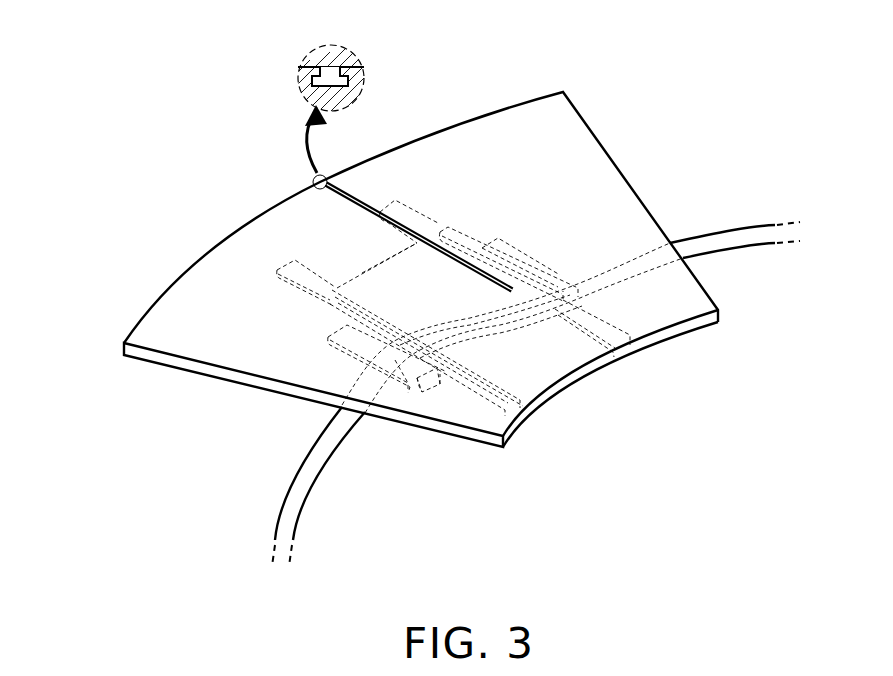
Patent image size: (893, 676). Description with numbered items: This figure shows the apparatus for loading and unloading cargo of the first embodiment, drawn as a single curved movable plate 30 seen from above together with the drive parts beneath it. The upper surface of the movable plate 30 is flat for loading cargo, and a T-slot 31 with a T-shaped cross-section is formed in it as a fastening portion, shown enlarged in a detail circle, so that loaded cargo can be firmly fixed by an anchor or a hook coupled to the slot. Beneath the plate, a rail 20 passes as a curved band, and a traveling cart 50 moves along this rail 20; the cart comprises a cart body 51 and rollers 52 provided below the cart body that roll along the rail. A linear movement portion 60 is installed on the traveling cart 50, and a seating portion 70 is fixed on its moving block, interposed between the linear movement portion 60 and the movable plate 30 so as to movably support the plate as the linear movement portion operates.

The rail 20 is at (316, 463).
The movable plate 30 is at (597, 163).
The T-slot 31 is at (330, 67).
The traveling cart 50 is at (405, 455).
The cart body 51 is at (383, 378).
The rollers 52 is at (432, 378).
The linear movement portion 60 is at (513, 396).
The seating portion 70 is at (502, 313).